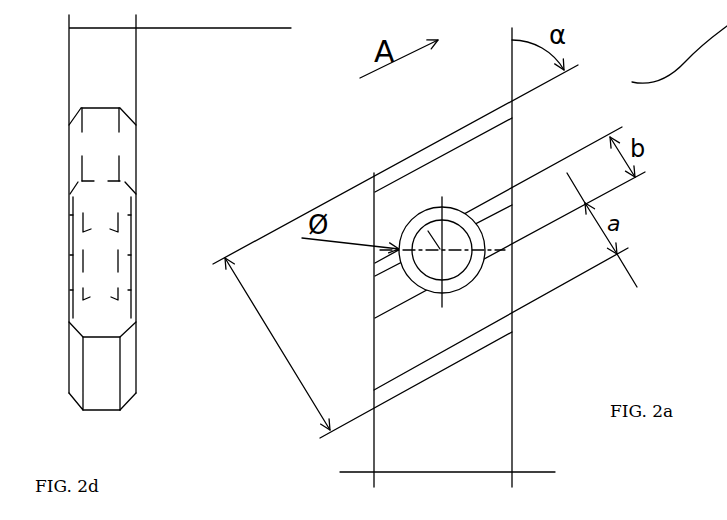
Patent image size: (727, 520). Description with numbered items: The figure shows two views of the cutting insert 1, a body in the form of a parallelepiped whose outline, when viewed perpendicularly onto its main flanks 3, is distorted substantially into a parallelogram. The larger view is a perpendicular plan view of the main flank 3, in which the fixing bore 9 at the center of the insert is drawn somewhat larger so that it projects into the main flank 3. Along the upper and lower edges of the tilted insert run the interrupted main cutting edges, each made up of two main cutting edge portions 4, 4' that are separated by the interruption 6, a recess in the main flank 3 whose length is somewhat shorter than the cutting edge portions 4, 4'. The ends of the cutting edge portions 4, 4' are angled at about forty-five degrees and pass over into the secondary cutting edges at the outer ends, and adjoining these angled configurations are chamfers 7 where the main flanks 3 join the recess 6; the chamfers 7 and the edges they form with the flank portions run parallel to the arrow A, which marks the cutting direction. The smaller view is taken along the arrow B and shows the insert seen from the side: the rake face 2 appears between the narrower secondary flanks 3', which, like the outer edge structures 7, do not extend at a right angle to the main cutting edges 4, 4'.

In FIG. 2D, the cutting insert 1 is at (153, 145).
In FIG. 2A, the cutting insert 1 is at (525, 326).
In FIG. 2D, the rake face 2 is at (113, 315).
In FIG. 2A, the main flank 3 is at (515, 235).
In FIG. 2D, the secondary flank 3' is at (122, 436).
In FIG. 2A, the main cutting edge portion 4 is at (516, 319).
In FIG. 2D, the main cutting edge portion 4' is at (143, 257).
In FIG. 2A, the main cutting edge portion 4' is at (499, 130).
In FIG. 2A, the interruption 6 is at (512, 210).
In FIG. 2D, the chamfer 7 is at (130, 366).
In FIG. 2A, the chamfer 7 is at (463, 125).
In FIG. 2A, the fixing bore 9 is at (434, 265).